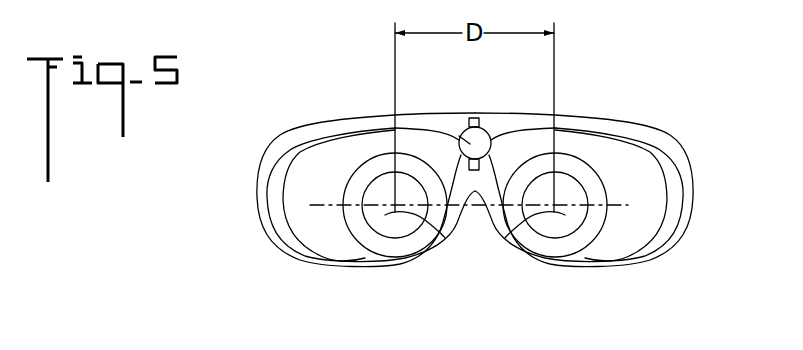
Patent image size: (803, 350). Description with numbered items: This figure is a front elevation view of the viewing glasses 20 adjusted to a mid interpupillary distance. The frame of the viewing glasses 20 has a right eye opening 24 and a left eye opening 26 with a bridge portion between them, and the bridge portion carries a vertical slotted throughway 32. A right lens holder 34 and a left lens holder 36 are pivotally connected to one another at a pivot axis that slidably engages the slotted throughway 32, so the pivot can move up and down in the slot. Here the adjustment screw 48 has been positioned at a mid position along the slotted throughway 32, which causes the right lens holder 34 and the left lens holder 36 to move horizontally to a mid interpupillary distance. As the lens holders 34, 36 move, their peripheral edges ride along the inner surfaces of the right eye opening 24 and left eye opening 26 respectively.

The viewing glasses 20 is at (723, 104).
The right eye opening 24 is at (275, 190).
The left eye opening 26 is at (678, 192).
The vertical slotted throughway 32 is at (480, 125).
The right lens holder 34 is at (323, 223).
The left lens holder 36 is at (617, 227).
The adjustment screw 48 is at (459, 136).